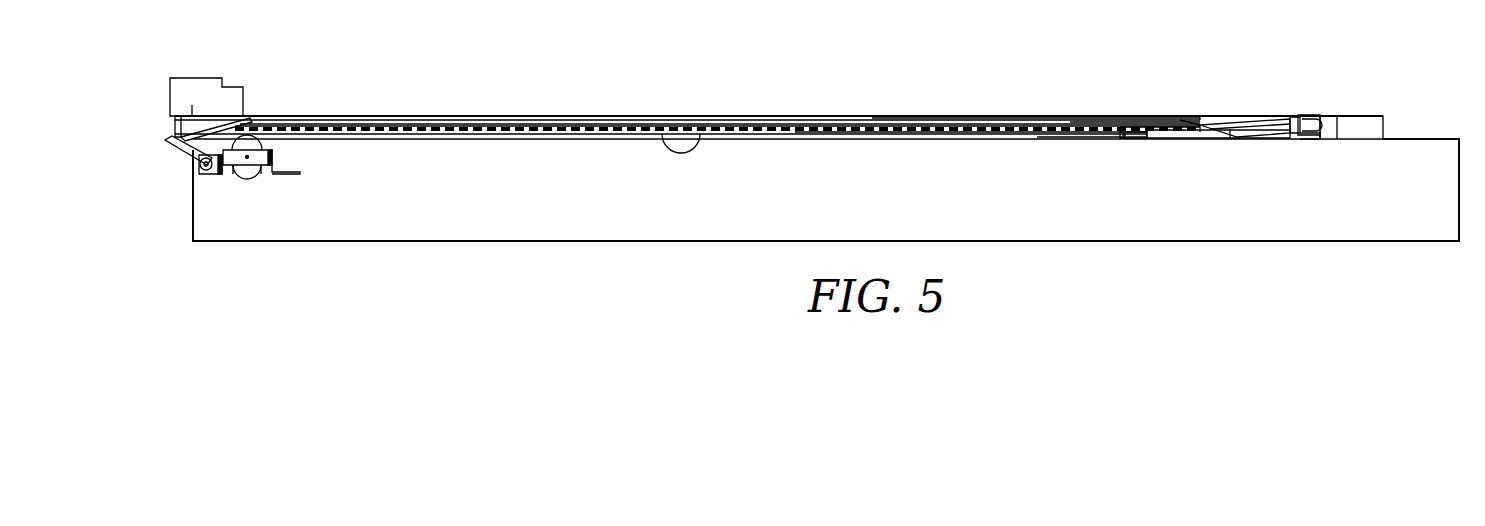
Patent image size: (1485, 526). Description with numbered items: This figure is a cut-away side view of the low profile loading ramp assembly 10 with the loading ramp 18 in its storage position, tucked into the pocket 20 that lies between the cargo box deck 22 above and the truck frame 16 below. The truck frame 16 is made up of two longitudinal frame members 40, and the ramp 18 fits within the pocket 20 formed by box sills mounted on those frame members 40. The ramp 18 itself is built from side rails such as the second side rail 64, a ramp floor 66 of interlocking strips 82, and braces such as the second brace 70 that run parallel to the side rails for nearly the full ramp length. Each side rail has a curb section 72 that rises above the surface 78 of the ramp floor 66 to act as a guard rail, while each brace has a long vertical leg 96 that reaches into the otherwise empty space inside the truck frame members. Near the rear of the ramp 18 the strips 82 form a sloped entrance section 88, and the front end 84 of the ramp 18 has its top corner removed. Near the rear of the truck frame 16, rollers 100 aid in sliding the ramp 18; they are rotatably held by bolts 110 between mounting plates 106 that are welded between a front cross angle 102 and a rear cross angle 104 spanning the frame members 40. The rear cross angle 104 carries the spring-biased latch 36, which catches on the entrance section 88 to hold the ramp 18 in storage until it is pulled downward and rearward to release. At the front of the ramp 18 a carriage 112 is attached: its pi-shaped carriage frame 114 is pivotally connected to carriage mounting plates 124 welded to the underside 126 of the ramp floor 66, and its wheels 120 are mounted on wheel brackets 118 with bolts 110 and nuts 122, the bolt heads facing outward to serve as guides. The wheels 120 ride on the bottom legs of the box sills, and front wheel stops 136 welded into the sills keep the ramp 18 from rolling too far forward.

The loading ramp assembly 10 is at (925, 96).
The truck frame 16 is at (1450, 183).
The loading ramp 18 is at (1138, 125).
The pocket 20 is at (1250, 118).
The deck 22 is at (203, 78).
The latch 36 is at (178, 122).
The frame members 40 is at (1450, 212).
The second side rail 64 is at (1070, 121).
The ramp floor 66 is at (795, 130).
The second brace 70 is at (1037, 137).
The curb section 72 is at (1200, 124).
The surface 78 is at (872, 118).
The interlocking strips 82 is at (515, 116).
The front end 84 is at (1220, 118).
The entrance section 88 is at (216, 172).
The long vertical leg 96 is at (397, 134).
The rollers 100 is at (252, 178).
The front cross angle 102 is at (300, 173).
The rear cross angle 104 is at (219, 176).
The mounting plates 106 is at (265, 166).
The bolts 110 is at (247, 157).
The carriage 112 is at (1205, 138).
The carriage frame 114 is at (1225, 138).
The wheel brackets 118 is at (1304, 118).
The wheels 120 is at (1322, 122).
The nuts 122 is at (1320, 136).
The carriage mounting plates 124 is at (1130, 139).
The underside 126 is at (662, 132).
The front wheel stops 136 is at (1340, 116).